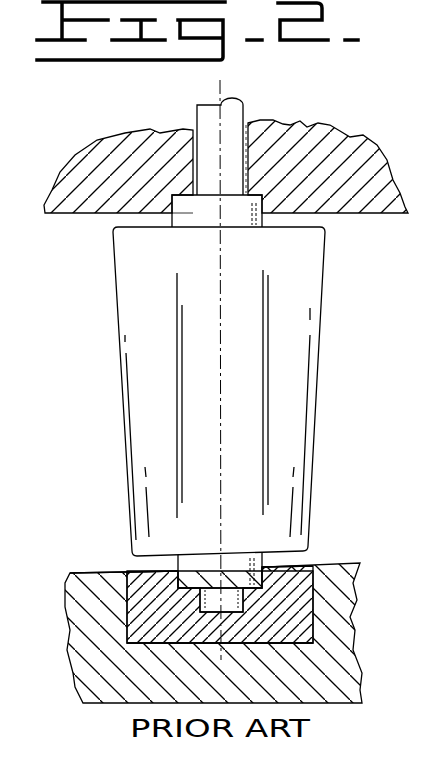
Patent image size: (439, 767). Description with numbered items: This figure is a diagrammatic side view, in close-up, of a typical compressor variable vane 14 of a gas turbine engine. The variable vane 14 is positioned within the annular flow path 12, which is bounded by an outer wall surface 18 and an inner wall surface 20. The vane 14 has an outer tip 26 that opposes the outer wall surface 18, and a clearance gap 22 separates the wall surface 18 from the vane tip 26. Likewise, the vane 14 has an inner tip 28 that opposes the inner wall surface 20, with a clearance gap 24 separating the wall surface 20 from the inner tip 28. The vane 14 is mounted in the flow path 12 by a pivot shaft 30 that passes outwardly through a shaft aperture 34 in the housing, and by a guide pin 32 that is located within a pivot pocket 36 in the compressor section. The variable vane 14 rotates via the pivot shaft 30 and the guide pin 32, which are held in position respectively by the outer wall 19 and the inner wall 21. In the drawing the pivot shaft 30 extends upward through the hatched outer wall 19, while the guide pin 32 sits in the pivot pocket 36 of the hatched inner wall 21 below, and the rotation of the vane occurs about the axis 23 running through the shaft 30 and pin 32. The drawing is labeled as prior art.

The annular flow path 12 is at (110, 450).
The variable vane 14 is at (142, 394).
The outer wall surface 18 is at (83, 214).
The outer wall 19 is at (92, 168).
The inner wall surface 20 is at (143, 572).
The inner wall 21 is at (93, 675).
The clearance gap 22 is at (332, 223).
The axis of rotation 23 is at (228, 365).
The clearance gap 24 is at (315, 555).
The outer tip 26 is at (297, 222).
The inner tip 28 is at (294, 548).
The pivot shaft 30 is at (208, 127).
The guide pin 32 is at (186, 643).
The shaft aperture 34 is at (257, 148).
The pivot pocket 36 is at (247, 608).